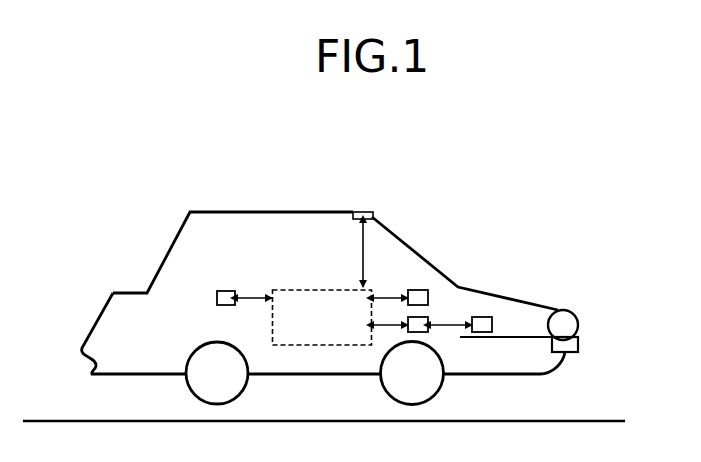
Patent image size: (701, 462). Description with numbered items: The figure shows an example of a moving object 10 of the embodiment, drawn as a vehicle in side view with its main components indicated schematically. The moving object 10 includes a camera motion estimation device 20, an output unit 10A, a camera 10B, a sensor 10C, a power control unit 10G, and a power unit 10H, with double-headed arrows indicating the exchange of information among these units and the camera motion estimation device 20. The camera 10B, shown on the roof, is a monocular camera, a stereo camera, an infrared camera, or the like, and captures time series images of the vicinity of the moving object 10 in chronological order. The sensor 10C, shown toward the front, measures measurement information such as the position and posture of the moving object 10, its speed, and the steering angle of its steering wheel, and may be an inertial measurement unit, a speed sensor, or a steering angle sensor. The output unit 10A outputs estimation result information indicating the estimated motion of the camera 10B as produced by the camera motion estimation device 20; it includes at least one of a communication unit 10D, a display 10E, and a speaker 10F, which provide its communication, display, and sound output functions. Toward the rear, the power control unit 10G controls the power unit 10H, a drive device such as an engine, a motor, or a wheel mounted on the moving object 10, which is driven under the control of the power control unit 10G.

The moving object 10 is at (244, 184).
The output unit 10A is at (428, 297).
The camera 10B is at (365, 212).
The sensor 10C is at (217, 298).
The communication unit 10D is at (418, 297).
The display 10E is at (418, 297).
The speaker 10F is at (418, 297).
The power control unit 10G is at (417, 331).
The power unit 10H is at (483, 331).
The camera motion estimation device 20 is at (323, 345).